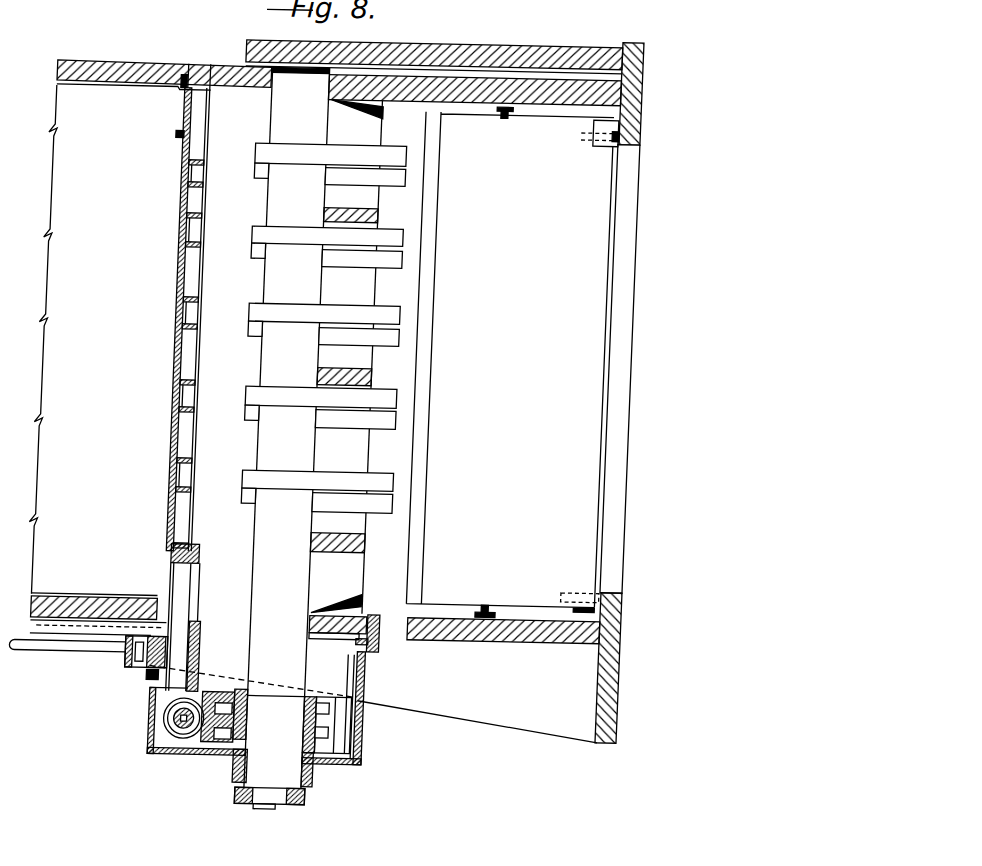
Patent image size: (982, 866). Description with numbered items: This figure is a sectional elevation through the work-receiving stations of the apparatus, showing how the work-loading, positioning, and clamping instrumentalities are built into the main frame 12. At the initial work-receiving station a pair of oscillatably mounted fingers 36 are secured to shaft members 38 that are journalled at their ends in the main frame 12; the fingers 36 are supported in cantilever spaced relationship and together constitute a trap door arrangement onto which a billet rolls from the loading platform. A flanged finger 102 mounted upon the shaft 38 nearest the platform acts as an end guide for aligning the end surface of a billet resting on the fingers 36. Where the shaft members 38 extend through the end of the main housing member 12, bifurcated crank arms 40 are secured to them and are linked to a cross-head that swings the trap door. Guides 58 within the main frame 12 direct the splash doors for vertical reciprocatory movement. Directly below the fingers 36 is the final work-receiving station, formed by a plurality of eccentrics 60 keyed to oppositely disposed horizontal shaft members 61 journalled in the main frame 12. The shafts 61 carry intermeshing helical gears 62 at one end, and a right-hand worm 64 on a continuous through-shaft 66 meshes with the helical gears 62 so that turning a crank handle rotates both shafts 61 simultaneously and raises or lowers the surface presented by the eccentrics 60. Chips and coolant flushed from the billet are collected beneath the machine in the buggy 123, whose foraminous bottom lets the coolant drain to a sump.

The main frame 12 is at (135, 75).
The guides 58 is at (101, 96).
The flanged finger 102 is at (181, 144).
The fingers 36 is at (186, 337).
The shaft members 38 is at (194, 590).
The horizontal shaft members 61 is at (322, 139).
The eccentrics 60 is at (402, 345).
The buggy 123 is at (522, 306).
The bifurcated crank arms 40 is at (145, 668).
The right-hand worm 64 is at (194, 728).
The through-shaft 66 is at (186, 757).
The helical gears 62 is at (370, 733).